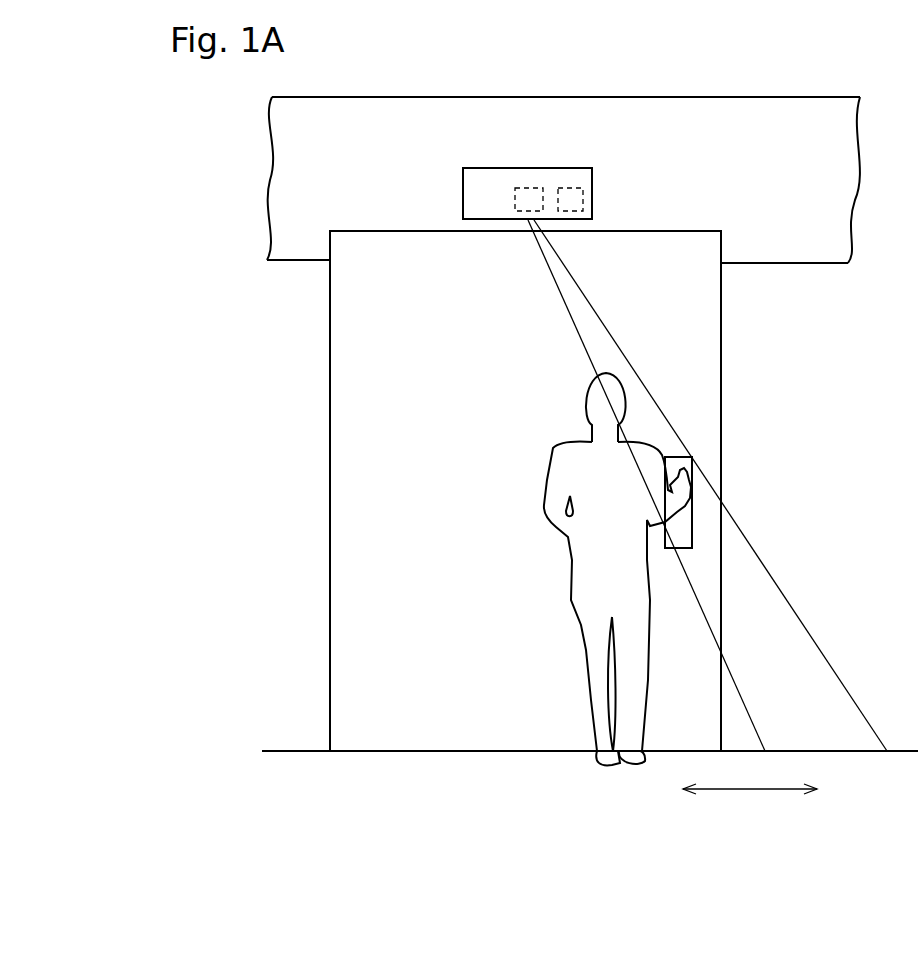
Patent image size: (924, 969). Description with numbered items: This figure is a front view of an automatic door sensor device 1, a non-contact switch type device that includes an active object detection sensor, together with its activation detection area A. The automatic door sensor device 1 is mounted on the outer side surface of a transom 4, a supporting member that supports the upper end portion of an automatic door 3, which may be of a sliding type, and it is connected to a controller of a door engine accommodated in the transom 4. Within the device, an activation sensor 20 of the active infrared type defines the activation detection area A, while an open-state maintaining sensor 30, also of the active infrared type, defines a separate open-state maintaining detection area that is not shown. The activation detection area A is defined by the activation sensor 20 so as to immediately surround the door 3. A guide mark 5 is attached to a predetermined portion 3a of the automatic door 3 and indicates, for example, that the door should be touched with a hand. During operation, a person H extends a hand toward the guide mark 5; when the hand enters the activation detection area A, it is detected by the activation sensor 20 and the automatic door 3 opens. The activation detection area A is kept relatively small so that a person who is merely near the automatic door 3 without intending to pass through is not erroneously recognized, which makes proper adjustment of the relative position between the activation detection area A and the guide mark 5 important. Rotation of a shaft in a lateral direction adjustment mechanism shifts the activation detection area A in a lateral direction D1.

The automatic door sensor device 1 is at (483, 168).
The activation sensor 20 is at (526, 188).
The open-state maintaining sensor 30 is at (572, 188).
The transom 4 is at (768, 97).
The automatic door 3 is at (348, 536).
The predetermined portion 3a is at (695, 480).
The guide mark 5 is at (695, 509).
The activation detection area A is at (773, 622).
The person H is at (581, 626).
The lateral direction D1 is at (748, 791).